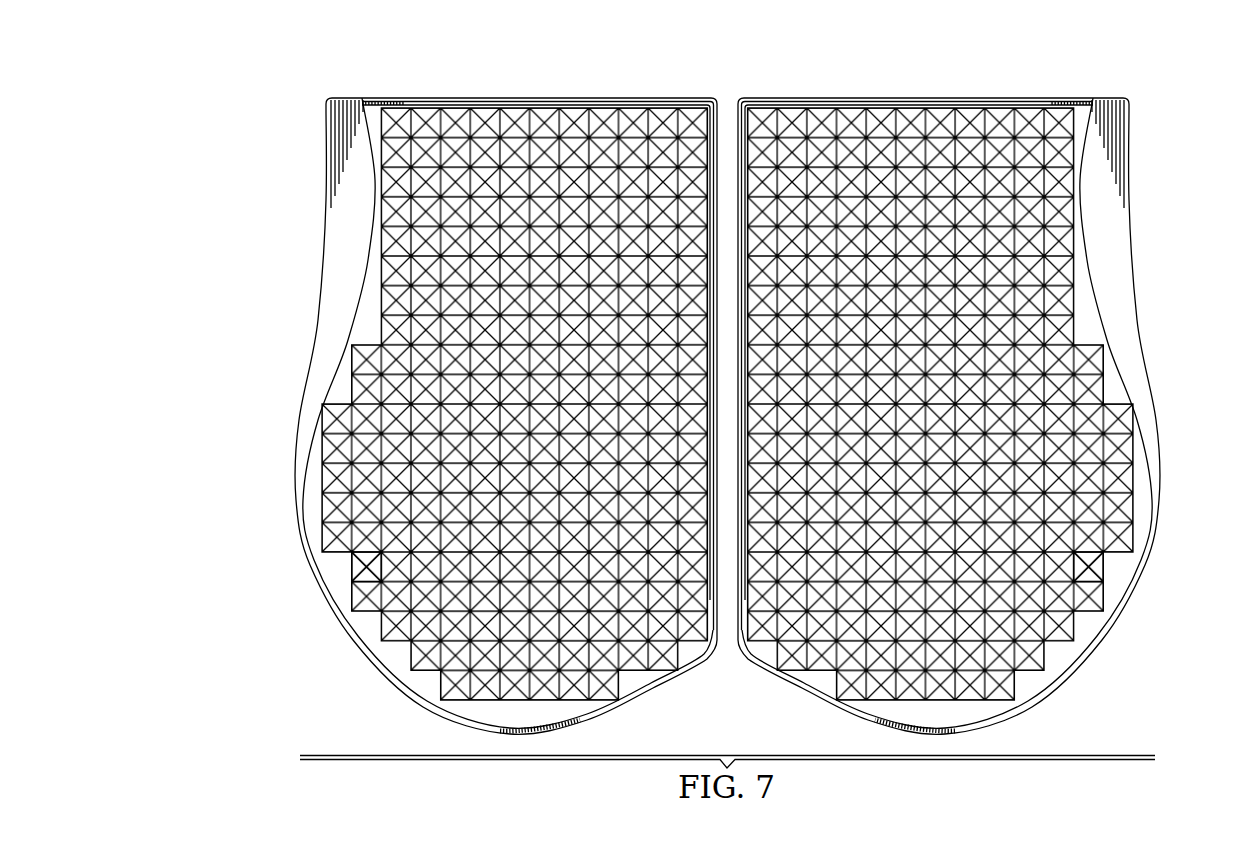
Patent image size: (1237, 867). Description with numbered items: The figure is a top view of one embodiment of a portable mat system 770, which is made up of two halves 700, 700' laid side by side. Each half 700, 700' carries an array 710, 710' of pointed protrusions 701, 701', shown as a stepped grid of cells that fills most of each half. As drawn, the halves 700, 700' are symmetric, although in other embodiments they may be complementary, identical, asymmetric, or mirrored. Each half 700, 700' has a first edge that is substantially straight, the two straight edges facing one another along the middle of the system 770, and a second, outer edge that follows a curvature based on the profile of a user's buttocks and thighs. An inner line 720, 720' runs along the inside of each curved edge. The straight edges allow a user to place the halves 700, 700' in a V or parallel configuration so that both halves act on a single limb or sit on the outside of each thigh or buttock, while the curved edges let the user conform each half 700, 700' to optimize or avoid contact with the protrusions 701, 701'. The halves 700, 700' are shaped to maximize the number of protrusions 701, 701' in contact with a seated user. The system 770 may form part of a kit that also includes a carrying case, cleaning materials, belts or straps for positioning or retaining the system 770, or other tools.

The half 700 is at (506, 380).
The half 700' is at (949, 380).
The portable mat system 770 is at (221, 126).
The perimeter line 720 is at (486, 413).
The perimeter line 720' is at (968, 413).
The pointed protrusions 701 is at (473, 404).
The pointed protrusions 701' is at (984, 404).
The array 710 is at (322, 585).
The array 710' is at (1134, 585).